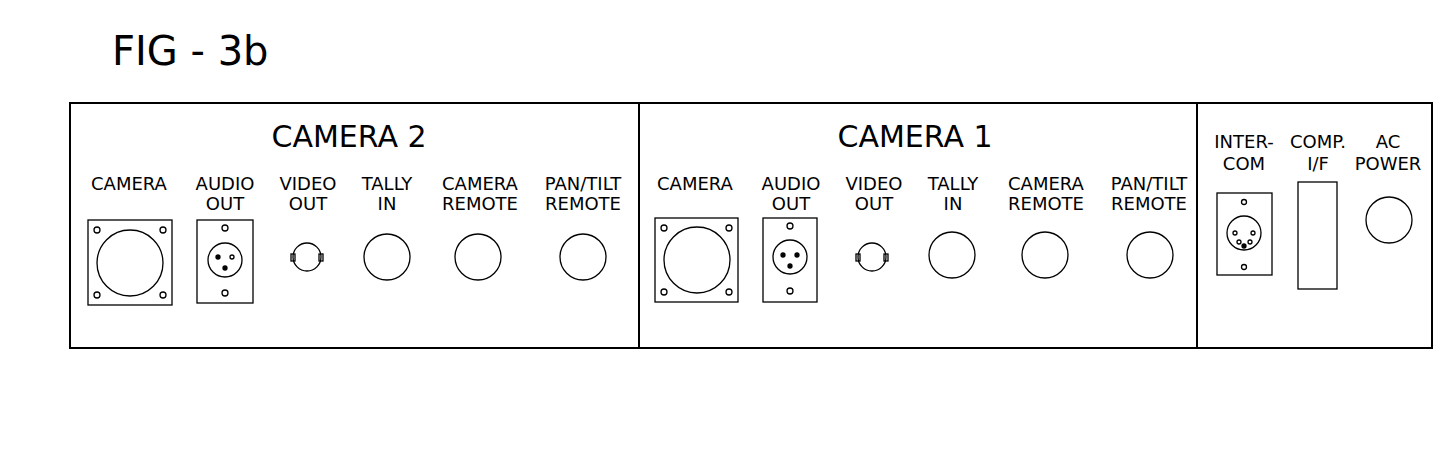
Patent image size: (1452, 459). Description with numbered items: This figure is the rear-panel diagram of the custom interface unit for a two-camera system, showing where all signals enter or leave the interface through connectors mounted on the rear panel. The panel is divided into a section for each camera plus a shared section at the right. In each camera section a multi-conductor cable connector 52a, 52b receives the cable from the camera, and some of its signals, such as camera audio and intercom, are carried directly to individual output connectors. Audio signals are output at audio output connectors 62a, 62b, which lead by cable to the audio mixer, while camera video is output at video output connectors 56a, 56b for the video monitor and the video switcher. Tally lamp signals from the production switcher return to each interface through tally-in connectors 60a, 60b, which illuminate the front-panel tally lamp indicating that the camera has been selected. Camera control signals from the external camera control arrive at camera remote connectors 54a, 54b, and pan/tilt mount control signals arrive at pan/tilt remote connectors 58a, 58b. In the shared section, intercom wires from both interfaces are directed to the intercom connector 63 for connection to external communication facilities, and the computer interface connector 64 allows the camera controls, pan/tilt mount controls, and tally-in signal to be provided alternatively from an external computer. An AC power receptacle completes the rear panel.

The multi-conductor cable connector 52a is at (708, 302).
The multi-conductor cable connector 52b is at (128, 305).
The audio output connector 62a is at (792, 302).
The audio output connector 62b is at (223, 303).
The video output connector 56a is at (872, 271).
The video output connector 56b is at (307, 271).
The tally-in connector 60a is at (952, 278).
The tally-in connector 60b is at (387, 280).
The camera remote connector 54a is at (1045, 278).
The camera remote connector 54b is at (478, 280).
The pan/tilt remote connector 58a is at (1150, 278).
The pan/tilt remote connector 58b is at (583, 280).
The intercom connector 63 is at (1250, 275).
The computer interface connector 64 is at (1318, 289).